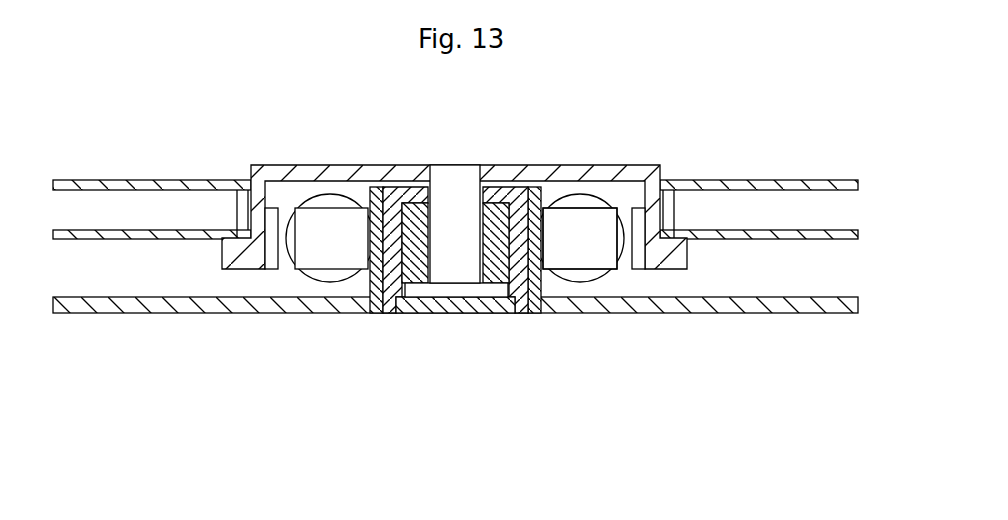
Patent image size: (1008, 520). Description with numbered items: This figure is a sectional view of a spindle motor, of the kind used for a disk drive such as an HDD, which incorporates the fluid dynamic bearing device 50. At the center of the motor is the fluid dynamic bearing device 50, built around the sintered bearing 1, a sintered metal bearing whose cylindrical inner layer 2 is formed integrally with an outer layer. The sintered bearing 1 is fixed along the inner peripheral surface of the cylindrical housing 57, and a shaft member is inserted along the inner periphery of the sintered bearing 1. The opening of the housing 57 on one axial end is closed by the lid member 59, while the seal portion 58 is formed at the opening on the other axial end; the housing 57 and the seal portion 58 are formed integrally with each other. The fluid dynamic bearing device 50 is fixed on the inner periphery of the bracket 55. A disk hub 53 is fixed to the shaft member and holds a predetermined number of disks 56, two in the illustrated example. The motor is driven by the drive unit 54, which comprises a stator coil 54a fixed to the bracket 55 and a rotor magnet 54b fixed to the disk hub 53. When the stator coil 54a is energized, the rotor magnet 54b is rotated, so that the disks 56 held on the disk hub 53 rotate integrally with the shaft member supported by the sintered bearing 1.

The sintered bearing 1 is at (502, 206).
The inner layer 2 is at (457, 202).
The fluid dynamic bearing device 50 is at (510, 185).
The disk hub 53 is at (615, 172).
The drive unit 54 is at (672, 358).
The stator coil 54a is at (580, 280).
The rotor magnet 54b is at (638, 266).
The bracket 55 is at (541, 298).
The disks 56 is at (770, 181).
The housing 57 is at (393, 212).
The seal portion 58 is at (412, 196).
The lid member 59 is at (452, 298).